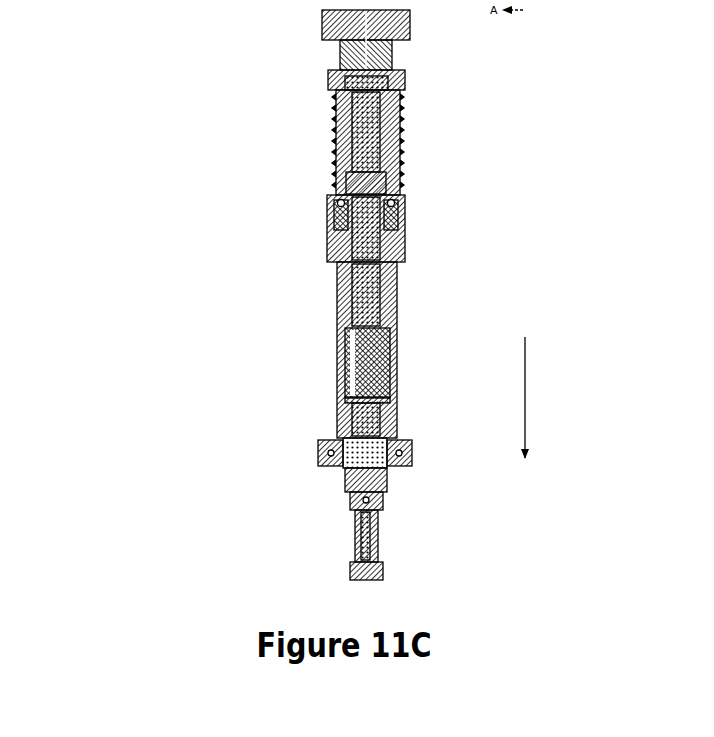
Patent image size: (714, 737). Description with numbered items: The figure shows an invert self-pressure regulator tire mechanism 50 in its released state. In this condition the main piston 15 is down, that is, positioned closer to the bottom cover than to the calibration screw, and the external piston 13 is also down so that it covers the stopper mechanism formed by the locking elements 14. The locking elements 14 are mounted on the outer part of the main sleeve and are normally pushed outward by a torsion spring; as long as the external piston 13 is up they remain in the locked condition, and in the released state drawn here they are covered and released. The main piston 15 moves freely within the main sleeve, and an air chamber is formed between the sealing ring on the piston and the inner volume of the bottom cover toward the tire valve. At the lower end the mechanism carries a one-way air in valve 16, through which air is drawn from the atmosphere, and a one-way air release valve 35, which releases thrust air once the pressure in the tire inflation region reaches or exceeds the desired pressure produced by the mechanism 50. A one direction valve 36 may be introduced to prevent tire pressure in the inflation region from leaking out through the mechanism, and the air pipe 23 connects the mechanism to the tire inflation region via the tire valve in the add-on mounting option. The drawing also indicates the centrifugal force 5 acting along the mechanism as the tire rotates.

The centrifugal force 5 is at (535, 349).
The external piston 13 is at (323, 202).
The locking element 14 is at (328, 242).
The main piston 15 is at (343, 378).
The one-way air in valve 16 is at (316, 453).
The air pipe 23 is at (380, 537).
The one-way air release valve 35 is at (415, 463).
The one direction valve 36 is at (356, 512).
The invert self-pressure regulator tire mechanism 50 is at (452, 167).